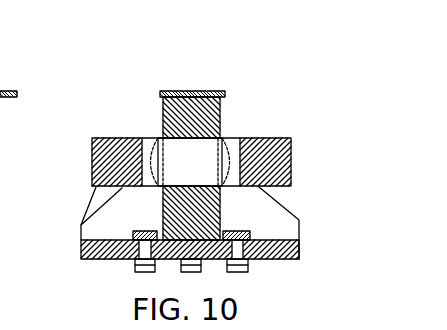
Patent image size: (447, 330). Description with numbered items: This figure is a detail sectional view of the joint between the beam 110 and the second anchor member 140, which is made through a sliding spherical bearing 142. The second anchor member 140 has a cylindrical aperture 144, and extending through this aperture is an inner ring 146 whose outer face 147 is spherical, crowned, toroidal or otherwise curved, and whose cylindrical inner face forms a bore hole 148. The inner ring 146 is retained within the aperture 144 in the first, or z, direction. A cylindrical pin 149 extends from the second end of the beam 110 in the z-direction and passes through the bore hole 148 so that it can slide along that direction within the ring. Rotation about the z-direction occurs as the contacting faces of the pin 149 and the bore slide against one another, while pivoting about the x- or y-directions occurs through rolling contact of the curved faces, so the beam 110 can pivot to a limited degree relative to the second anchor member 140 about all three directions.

The beam 110 is at (296, 261).
The second anchor member 140 is at (274, 138).
The sliding spherical bearing 142 is at (122, 105).
The cylindrical aperture 144 is at (232, 141).
The inner ring 146 is at (147, 162).
The spherical outer face 147 is at (92, 178).
The bore hole 148 is at (80, 225).
The cylindrical pin 149 is at (159, 134).